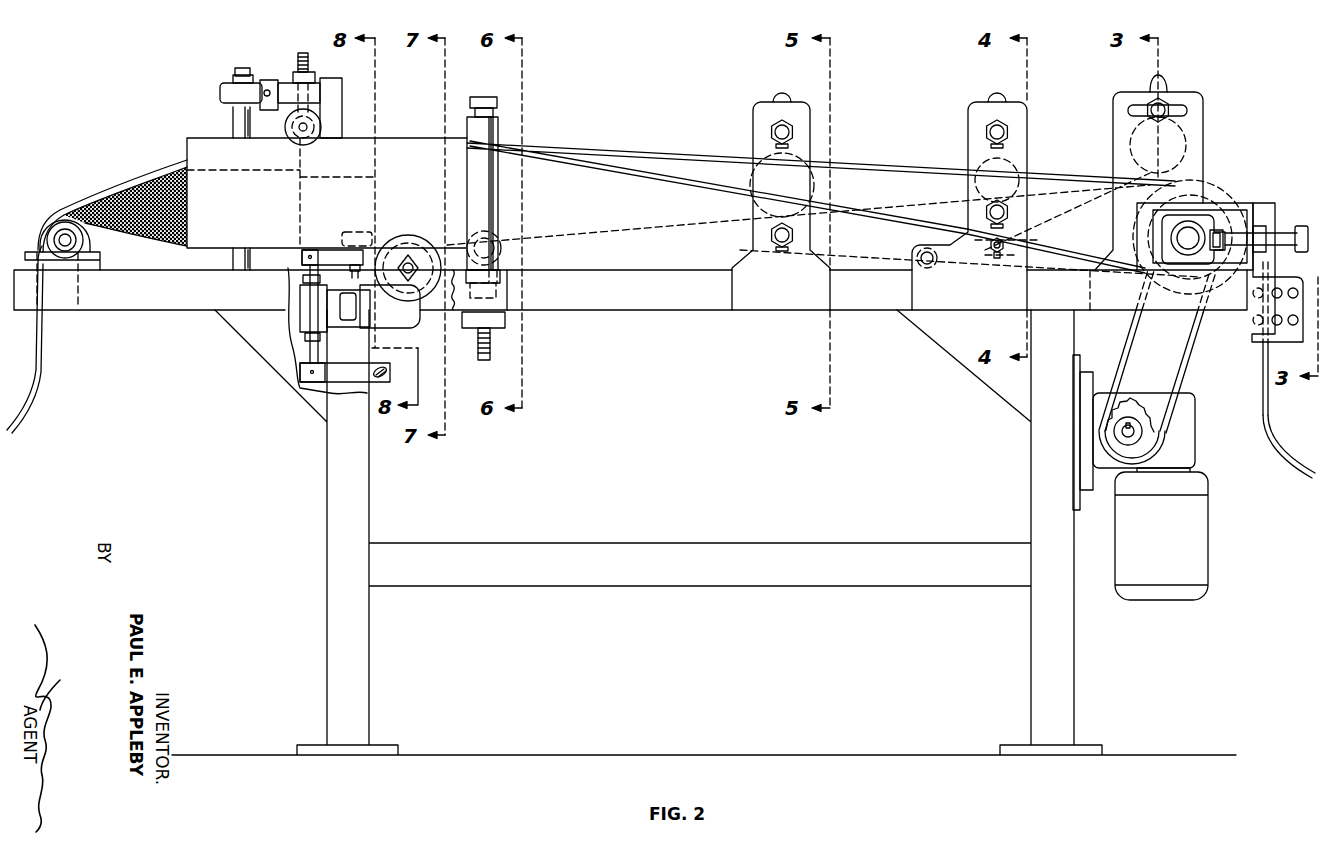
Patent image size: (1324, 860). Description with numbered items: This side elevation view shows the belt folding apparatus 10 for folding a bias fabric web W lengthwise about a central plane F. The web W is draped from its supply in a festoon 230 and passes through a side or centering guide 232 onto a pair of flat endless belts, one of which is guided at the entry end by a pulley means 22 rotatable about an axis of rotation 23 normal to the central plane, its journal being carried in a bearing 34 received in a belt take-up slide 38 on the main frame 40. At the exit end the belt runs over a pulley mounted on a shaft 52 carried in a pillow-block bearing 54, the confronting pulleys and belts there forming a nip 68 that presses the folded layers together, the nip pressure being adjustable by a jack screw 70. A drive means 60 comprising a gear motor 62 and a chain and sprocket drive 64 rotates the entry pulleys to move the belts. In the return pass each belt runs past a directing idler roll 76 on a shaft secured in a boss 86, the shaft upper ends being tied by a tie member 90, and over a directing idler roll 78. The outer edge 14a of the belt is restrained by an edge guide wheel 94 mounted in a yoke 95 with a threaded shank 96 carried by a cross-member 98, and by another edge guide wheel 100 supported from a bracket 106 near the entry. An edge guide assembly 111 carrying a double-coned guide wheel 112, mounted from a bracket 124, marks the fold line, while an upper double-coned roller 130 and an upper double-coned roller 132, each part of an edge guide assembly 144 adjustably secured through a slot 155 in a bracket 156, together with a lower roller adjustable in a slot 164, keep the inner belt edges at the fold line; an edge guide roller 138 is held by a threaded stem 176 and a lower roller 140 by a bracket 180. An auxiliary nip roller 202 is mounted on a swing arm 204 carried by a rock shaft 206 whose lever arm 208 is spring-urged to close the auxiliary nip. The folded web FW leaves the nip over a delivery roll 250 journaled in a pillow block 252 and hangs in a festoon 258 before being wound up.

The belt folding apparatus 10 is at (170, 128).
The outer edge 14a is at (636, 160).
The pulley means 22 is at (1192, 230).
The axis of rotation 23 is at (1218, 240).
The bearing 34 is at (1198, 263).
The belt take-up slide 38 is at (1252, 212).
The main frame 40 is at (905, 311).
The shaft 52 is at (233, 122).
The pillow-block bearing 54 is at (233, 86).
The drive means 60 is at (1212, 513).
The gear motor 62 is at (1195, 472).
The chain and sprocket drive 64 is at (1172, 376).
The nip 68 is at (180, 163).
The jack screw 70 is at (266, 98).
The directing idler roll 76 is at (500, 127).
The directing idler roll 78 is at (935, 266).
The boss 86 is at (500, 300).
The tie member 90 is at (470, 100).
The edge guide wheel 94 is at (322, 125).
The yoke 95 is at (307, 100).
The threaded shank 96 is at (301, 52).
The cross-member 98 is at (297, 60).
The edge guide wheel 100 is at (1015, 243).
The bracket 106 is at (1028, 207).
The edge guide assembly 111 is at (1166, 80).
The guide wheel 112 is at (1186, 147).
The bracket 124 is at (1205, 110).
The upper double-coned roller 130 is at (1015, 165).
The upper double-coned roller 132 is at (818, 186).
The edge guide roller 138 is at (502, 258).
The lower roller 140 is at (406, 234).
The edge guide assembly 144 is at (773, 99).
The slot 155 is at (775, 130).
The bracket 156 is at (812, 153).
The slot 164 is at (1008, 232).
The threaded stem 176 is at (483, 352).
The bracket 180 is at (382, 328).
The roller 202 is at (345, 234).
The swing arm 204 is at (330, 262).
The rock shaft 206 is at (350, 270).
The lever arm 208 is at (338, 378).
The festoon 230 is at (1312, 480).
The side or centering guide 232 is at (1263, 325).
The delivery roll 250 is at (80, 302).
The pillow block 252 is at (85, 242).
The festoon 258 is at (28, 420).
The folded web FW is at (113, 204).
The bias fabric web W is at (1270, 436).